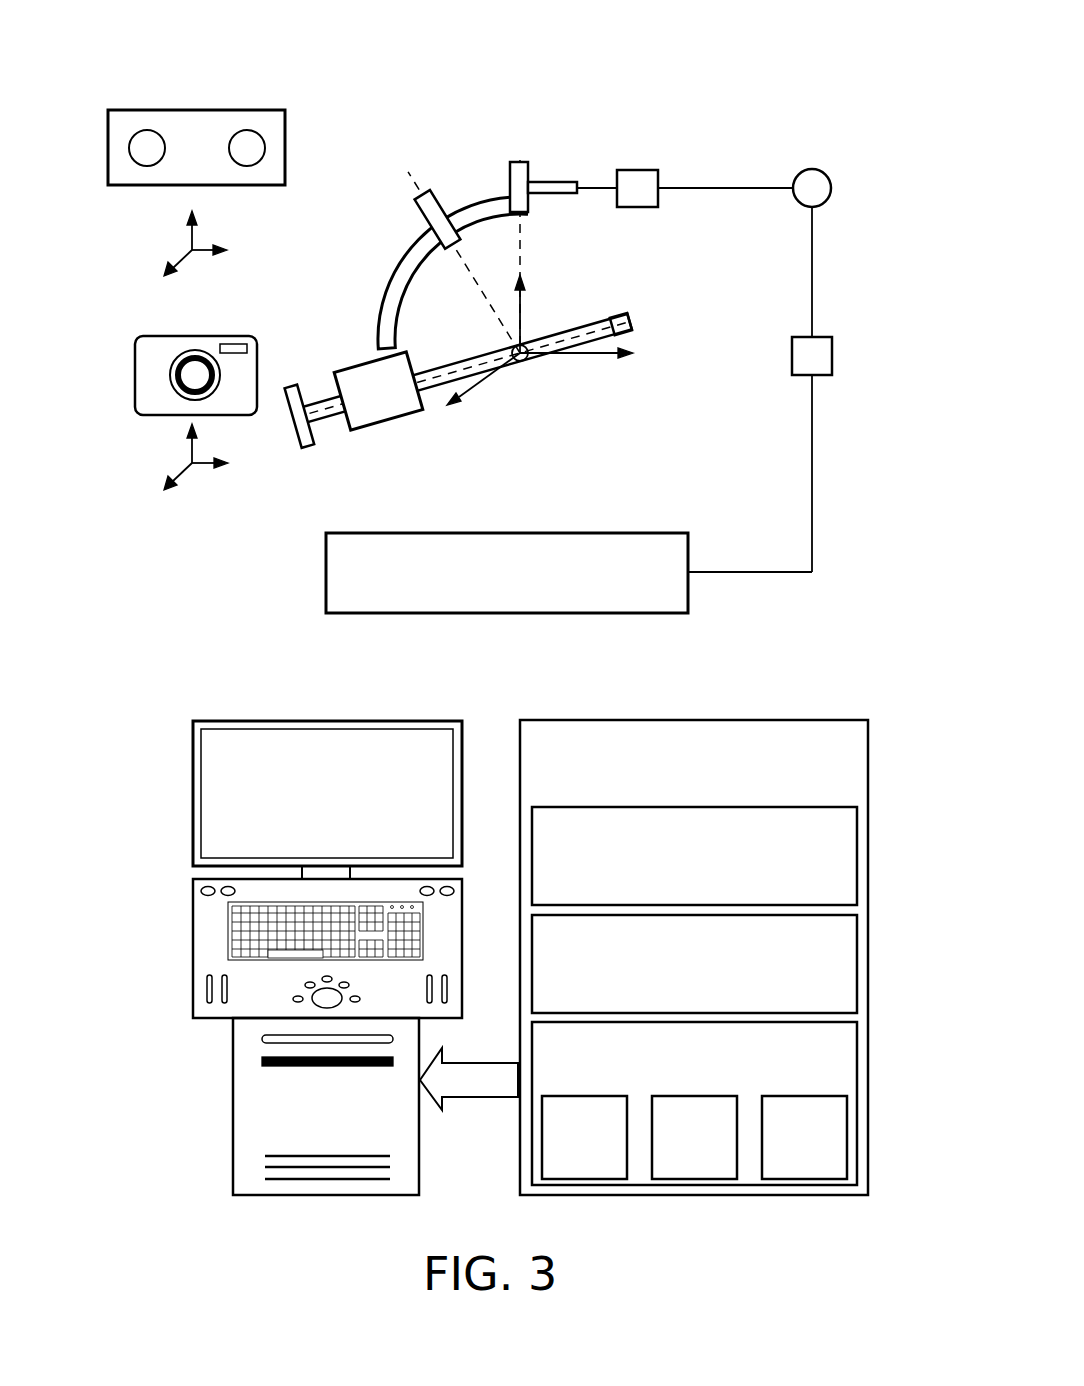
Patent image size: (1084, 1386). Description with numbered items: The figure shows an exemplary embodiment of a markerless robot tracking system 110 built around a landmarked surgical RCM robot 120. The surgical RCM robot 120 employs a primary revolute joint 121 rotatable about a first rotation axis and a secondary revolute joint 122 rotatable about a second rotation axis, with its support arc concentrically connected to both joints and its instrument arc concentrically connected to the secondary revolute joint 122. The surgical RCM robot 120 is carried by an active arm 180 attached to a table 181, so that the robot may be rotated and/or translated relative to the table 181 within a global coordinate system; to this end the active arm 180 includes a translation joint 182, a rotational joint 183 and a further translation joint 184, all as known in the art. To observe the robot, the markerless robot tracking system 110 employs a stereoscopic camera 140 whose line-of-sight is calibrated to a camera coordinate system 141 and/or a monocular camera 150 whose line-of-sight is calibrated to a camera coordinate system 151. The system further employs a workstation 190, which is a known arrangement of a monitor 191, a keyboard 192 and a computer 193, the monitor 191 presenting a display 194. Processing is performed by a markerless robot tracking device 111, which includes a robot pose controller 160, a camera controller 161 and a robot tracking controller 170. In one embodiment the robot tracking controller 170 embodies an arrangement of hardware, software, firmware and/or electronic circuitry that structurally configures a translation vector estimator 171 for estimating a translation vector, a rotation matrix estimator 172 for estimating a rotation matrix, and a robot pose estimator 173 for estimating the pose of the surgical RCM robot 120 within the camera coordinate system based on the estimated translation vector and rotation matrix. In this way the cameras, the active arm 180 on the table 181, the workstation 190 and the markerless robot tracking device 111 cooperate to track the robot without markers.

The markerless robot tracking system 110 is at (797, 78).
The surgical RCM robot 120 is at (398, 211).
The primary revolute joint 121 is at (544, 318).
The secondary revolute joint 122 is at (525, 361).
The stereoscopic camera 140 is at (240, 110).
The camera coordinate system 141 is at (160, 240).
The monocular camera 150 is at (240, 336).
The camera coordinate system 151 is at (160, 454).
The active arm 180 is at (835, 268).
The table 181 is at (521, 584).
The translation joint 182 is at (792, 355).
The rotational joint 183 is at (812, 169).
The translation joint 184 is at (638, 170).
The workstation 190 is at (196, 699).
The monitor 191 is at (193, 780).
The keyboard 192 is at (193, 942).
The computer 193 is at (233, 1100).
The display 194 is at (348, 809).
The markerless robot tracking device 111 is at (716, 789).
The robot pose controller 160 is at (716, 881).
The camera controller 161 is at (716, 991).
The robot tracking controller 170 is at (715, 1082).
The translation vector estimator 171 is at (605, 1168).
The rotation matrix estimator 172 is at (716, 1168).
The robot pose estimator 173 is at (826, 1168).